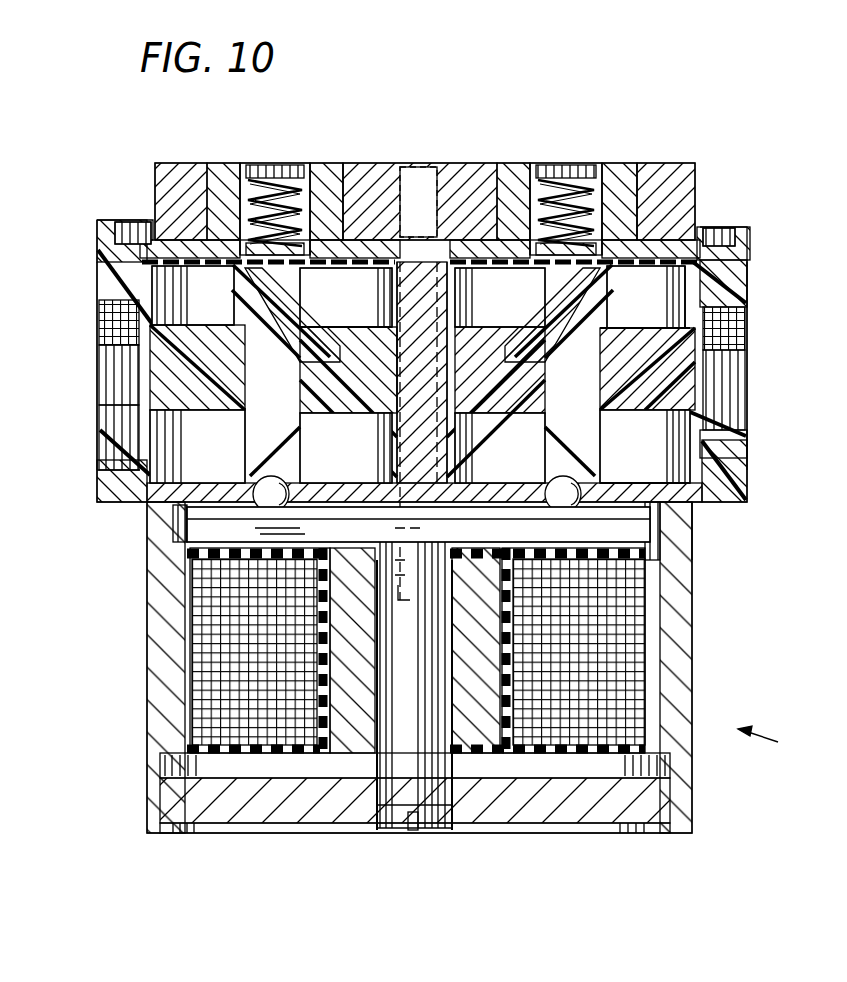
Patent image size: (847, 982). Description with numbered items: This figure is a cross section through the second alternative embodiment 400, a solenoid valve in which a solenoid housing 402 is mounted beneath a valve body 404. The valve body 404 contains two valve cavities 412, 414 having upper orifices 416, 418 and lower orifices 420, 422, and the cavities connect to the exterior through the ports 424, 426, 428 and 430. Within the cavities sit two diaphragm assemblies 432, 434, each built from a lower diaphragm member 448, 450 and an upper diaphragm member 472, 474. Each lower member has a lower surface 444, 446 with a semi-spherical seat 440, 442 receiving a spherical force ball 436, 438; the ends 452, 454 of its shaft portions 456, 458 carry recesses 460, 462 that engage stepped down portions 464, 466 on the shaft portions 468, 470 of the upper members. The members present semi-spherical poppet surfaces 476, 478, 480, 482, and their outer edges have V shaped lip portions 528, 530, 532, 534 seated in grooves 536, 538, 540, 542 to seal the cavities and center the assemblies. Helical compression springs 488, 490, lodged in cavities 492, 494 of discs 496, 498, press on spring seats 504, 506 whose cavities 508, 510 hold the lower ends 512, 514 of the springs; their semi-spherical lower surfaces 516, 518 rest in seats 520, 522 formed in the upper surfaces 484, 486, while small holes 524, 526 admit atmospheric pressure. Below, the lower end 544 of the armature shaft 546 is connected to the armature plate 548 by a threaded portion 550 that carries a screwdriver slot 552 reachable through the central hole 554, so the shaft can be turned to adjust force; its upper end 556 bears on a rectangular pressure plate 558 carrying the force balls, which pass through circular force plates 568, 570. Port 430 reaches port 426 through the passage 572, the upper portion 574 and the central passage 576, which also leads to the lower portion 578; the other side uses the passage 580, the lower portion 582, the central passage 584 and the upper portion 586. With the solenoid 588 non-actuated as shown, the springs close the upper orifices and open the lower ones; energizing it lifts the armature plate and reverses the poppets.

The second alternative embodiment 400 is at (778, 741).
The solenoid housing 402 is at (692, 627).
The valve body 404 is at (750, 235).
The valve cavity 412 is at (100, 290).
The valve cavity 414 is at (745, 300).
The upper orifice 416 is at (190, 295).
The upper orifice 418 is at (488, 297).
The lower orifice 420 is at (108, 400).
The lower orifice 422 is at (424, 372).
The port 424 is at (748, 395).
The port 426 is at (348, 388).
The port 428 is at (647, 369).
The port 430 is at (100, 368).
The diaphragm assembly 432 is at (105, 455).
The diaphragm assembly 434 is at (645, 446).
The spherical force ball 436 is at (195, 555).
The spherical force ball 438 is at (568, 510).
The semi-spherical seat 440 is at (356, 448).
The semi-spherical seat 442 is at (645, 472).
The lower surface 444 is at (178, 520).
The lower surface 446 is at (660, 520).
The lower diaphragm member 448 is at (262, 492).
The lower diaphragm member 450 is at (685, 510).
The end 452 is at (348, 428).
The end 454 is at (649, 386).
The shaft portion 456 is at (346, 448).
The shaft portion 458 is at (500, 448).
The recess 460 is at (197, 446).
The recess 462 is at (489, 448).
The stepped down portion 464 is at (197, 367).
The stepped down portion 466 is at (496, 388).
The shaft portion 468 is at (197, 367).
The shaft portion 470 is at (500, 370).
The upper diaphragm member 472 is at (110, 280).
The upper diaphragm member 474 is at (740, 280).
The semi-spherical poppet surface 476 is at (346, 316).
The semi-spherical poppet surface 478 is at (303, 451).
The semi-spherical poppet surface 480 is at (654, 297).
The semi-spherical poppet surface 482 is at (653, 446).
The upper surface 484 is at (175, 243).
The upper surface 486 is at (708, 228).
The helical compression spring 488 is at (325, 185).
The helical compression spring 490 is at (608, 185).
The cavity 492 is at (252, 175).
The cavity 494 is at (538, 178).
The disc 496 is at (225, 175).
The disc 498 is at (512, 175).
The spring seat 504 is at (193, 295).
The spring seat 506 is at (500, 297).
The cavity 508 is at (225, 200).
The cavity 510 is at (455, 180).
The lower end 512 is at (425, 172).
The lower end 514 is at (655, 185).
The lower surface 516 is at (346, 296).
The lower surface 518 is at (646, 297).
The semi-spherical seat 520 is at (355, 297).
The semi-spherical seat 522 is at (645, 318).
The small hole 524 is at (285, 165).
The small hole 526 is at (572, 175).
The V shaped lip portion 528 is at (118, 240).
The V shaped lip portion 530 is at (160, 490).
The V shaped lip portion 532 is at (730, 250).
The V shaped lip portion 534 is at (730, 478).
The groove 536 is at (125, 262).
The groove 538 is at (120, 480).
The groove 540 is at (735, 275).
The groove 542 is at (725, 460).
The lower end 544 is at (375, 775).
The armature shaft 546 is at (385, 762).
The armature plate 548 is at (290, 820).
The shaft bottom 550 is at (405, 810).
The screwdriver slot 552 is at (420, 830).
The central hole 554 is at (650, 833).
The upper end 556 is at (372, 542).
The rectangular pressure plate 558 is at (205, 563).
The circular force plate 568 is at (297, 529).
The circular force plate 570 is at (475, 528).
The passage 572 is at (110, 355).
The upper portion 574 is at (102, 310).
The central passage 576 is at (348, 370).
The lower portion 578 is at (115, 445).
The passage 580 is at (745, 363).
The lower portion 582 is at (735, 440).
The central passage 584 is at (647, 369).
The upper portion 586 is at (745, 325).
The solenoid 588 is at (640, 692).